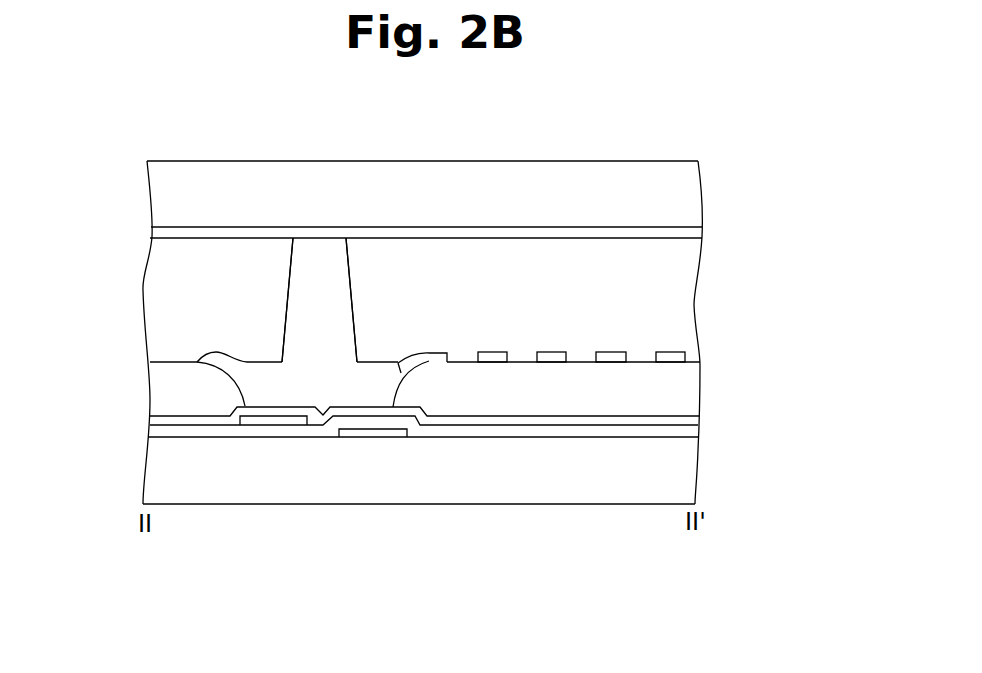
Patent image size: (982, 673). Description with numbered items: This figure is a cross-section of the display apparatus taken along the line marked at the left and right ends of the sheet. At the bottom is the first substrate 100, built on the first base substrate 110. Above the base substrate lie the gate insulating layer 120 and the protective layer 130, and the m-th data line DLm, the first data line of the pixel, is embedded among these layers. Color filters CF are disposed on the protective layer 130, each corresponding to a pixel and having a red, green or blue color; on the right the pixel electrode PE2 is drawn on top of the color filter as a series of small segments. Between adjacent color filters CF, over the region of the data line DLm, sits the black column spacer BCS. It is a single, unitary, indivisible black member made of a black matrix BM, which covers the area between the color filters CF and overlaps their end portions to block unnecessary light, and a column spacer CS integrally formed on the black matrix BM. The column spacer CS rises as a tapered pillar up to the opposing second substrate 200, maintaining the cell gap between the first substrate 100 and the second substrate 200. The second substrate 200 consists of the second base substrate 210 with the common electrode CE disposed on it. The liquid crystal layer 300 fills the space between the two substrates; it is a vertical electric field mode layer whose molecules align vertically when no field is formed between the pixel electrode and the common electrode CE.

The second substrate 200 is at (785, 175).
The second base substrate 210 is at (688, 184).
The common electrode CE is at (688, 233).
The liquid crystal layer 300 is at (688, 302).
The first substrate 100 is at (785, 352).
The color filters CF is at (688, 383).
The protective layer 130 is at (688, 422).
The gate insulating layer 120 is at (688, 434).
The first base substrate 110 is at (688, 477).
The m-th data line DLm is at (257, 421).
The black matrix BM is at (291, 383).
The column spacer CS is at (323, 337).
The black column spacer BCS is at (353, 575).
The second pixel electrode PE2 is at (493, 357).